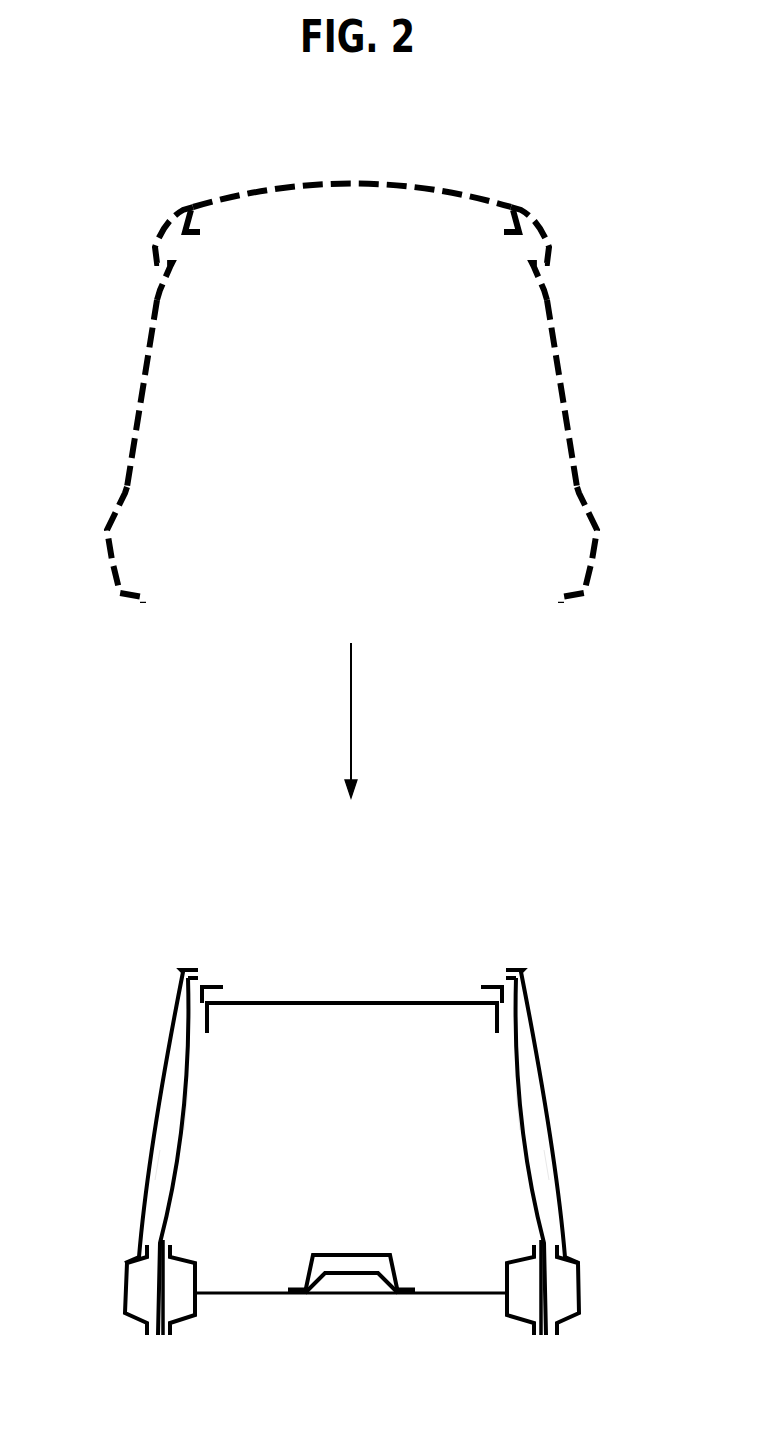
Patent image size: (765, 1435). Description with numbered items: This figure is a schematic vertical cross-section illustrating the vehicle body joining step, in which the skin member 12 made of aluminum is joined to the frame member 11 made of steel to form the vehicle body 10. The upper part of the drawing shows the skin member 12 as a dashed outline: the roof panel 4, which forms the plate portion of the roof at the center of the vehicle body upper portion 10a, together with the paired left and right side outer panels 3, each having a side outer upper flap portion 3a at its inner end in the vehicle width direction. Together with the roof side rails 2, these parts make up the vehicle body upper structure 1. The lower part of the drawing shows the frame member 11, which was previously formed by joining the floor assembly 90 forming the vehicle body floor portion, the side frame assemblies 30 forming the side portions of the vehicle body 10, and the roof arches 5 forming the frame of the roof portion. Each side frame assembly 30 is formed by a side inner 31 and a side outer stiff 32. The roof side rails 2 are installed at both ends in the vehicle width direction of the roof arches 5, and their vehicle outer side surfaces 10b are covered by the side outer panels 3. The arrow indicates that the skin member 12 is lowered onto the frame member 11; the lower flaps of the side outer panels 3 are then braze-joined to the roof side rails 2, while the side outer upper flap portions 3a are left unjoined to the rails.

The vehicle body upper structure 1 is at (500, 132).
The roof panel 4 is at (367, 180).
The vehicle body 10 is at (148, 208).
The skin member 12 is at (556, 208).
The side outer panel 3 is at (130, 377).
The side outer upper flap portion 3a is at (130, 410).
The roof side rail 2 is at (178, 985).
The frame member 11 is at (183, 1076).
The vehicle body upper portion 10a is at (280, 1002).
The vehicle outer side surface 10b is at (142, 1205).
The roof arch 5 is at (348, 1006).
The side frame assembly 30 is at (265, 1082).
The side inner 31 is at (184, 1118).
The side outer stiff 32 is at (150, 1170).
The floor assembly 90 is at (261, 1312).